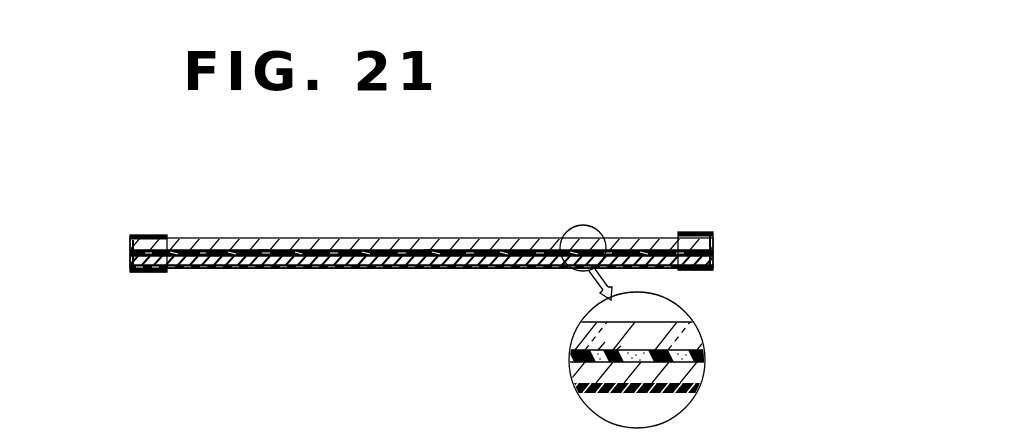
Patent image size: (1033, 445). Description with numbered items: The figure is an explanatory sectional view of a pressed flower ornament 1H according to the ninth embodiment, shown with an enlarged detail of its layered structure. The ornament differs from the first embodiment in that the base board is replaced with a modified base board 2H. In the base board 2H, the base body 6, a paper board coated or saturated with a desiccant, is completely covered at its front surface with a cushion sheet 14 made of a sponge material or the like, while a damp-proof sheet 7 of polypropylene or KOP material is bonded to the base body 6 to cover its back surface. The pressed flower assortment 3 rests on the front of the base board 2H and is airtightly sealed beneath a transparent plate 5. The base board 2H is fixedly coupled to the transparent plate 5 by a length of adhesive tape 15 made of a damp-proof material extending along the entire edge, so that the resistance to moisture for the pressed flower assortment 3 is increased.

The pressed flower ornament 1H is at (697, 193).
The base board 2H is at (322, 269).
The pressed flower assortment 3 is at (264, 248).
The transparent plate 5 is at (479, 240).
The base body 6 is at (480, 269).
The damp-proof sheet 7 is at (405, 269).
The cushion sheet 14 is at (201, 250).
The adhesive tape 15 is at (146, 235).